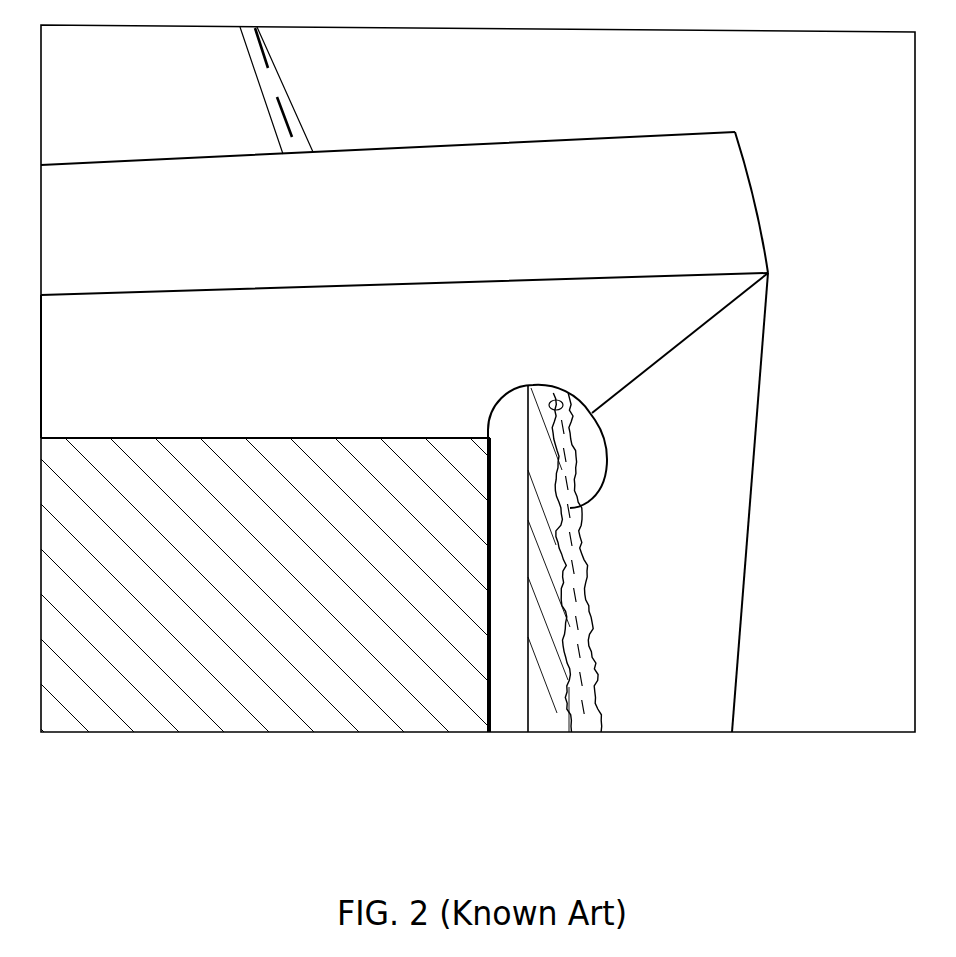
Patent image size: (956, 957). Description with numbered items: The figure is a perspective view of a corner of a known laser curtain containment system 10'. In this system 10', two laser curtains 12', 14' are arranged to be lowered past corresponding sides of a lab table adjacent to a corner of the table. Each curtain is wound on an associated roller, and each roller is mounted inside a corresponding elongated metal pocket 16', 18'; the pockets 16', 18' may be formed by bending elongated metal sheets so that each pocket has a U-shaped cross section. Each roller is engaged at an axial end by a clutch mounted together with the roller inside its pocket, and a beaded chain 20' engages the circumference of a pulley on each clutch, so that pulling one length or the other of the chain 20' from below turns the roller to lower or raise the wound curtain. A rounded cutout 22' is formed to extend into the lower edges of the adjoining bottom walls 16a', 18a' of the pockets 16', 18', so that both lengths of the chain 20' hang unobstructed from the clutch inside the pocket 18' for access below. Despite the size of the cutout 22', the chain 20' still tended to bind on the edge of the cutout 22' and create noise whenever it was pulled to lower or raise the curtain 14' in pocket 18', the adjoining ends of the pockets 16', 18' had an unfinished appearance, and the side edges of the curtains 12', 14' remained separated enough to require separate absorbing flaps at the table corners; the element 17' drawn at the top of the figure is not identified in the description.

The laser curtain containment system 10' is at (786, 195).
The laser curtain 12' is at (538, 578).
The laser curtain 14' is at (265, 585).
The elongated metal pocket 16' is at (680, 397).
The bottom wall 16a' is at (770, 502).
The fastener 17' is at (297, 90).
The elongated metal pocket 18' is at (404, 213).
The bottom wall 18a' is at (42, 366).
The beaded chain 20' is at (607, 562).
The rounded cutout 22' is at (582, 558).